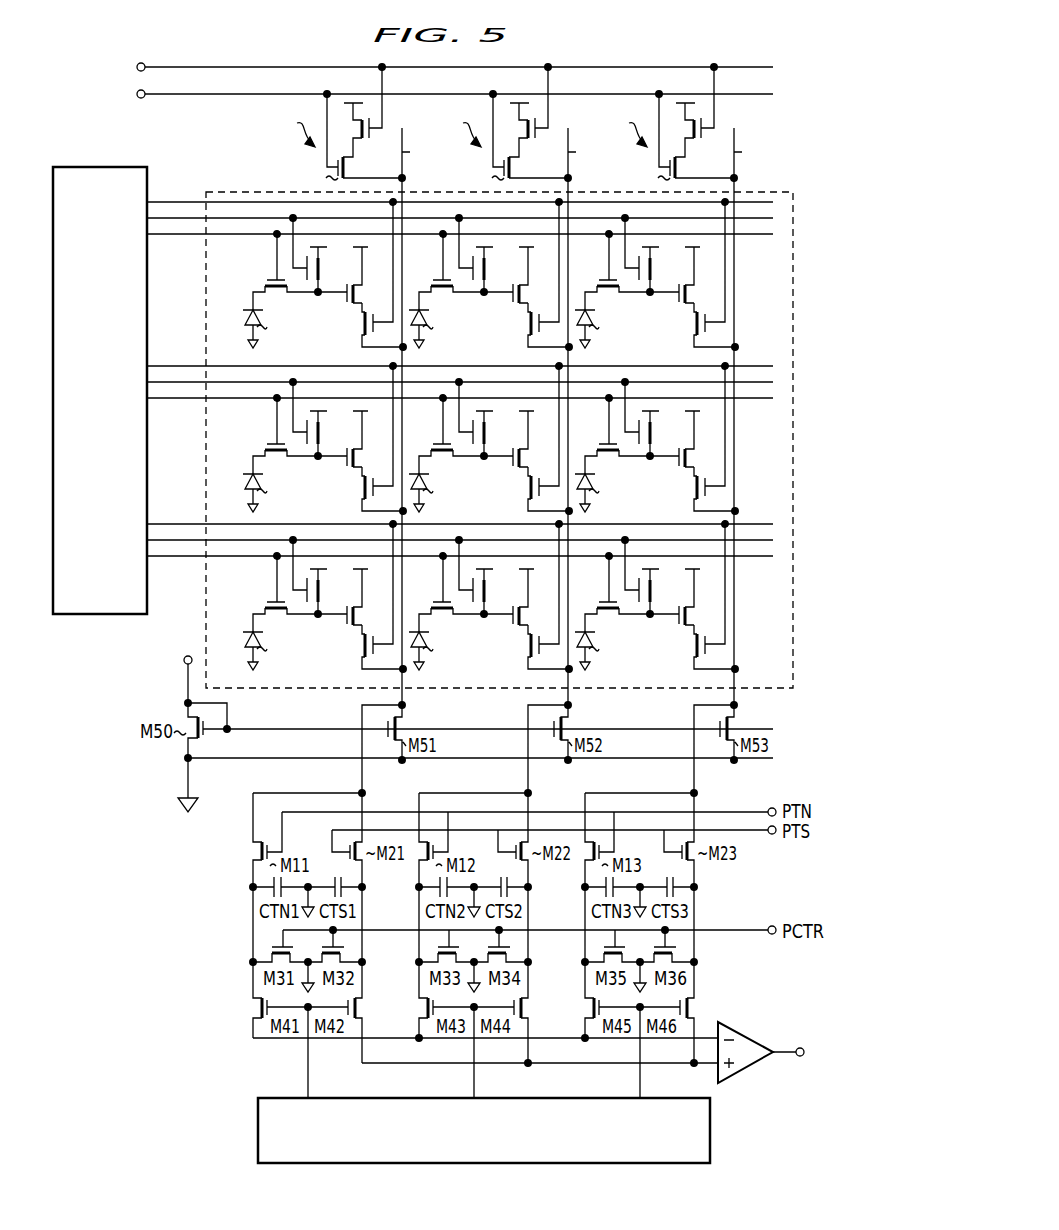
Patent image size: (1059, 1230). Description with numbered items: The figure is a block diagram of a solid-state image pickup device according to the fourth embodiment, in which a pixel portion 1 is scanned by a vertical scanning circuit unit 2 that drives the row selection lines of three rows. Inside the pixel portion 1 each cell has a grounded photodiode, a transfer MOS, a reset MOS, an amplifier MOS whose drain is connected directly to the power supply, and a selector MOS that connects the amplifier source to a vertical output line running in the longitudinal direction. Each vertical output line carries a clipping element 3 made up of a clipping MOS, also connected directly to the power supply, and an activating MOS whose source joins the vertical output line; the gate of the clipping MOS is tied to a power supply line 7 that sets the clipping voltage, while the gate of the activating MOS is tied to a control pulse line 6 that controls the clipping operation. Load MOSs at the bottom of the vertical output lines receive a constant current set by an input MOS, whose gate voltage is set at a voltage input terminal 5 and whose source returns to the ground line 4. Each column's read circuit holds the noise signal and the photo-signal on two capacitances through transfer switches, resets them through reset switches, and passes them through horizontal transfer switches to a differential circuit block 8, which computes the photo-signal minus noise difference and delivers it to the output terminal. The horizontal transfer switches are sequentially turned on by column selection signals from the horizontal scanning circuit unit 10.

The pixel portion 1 is at (237, 191).
The vertical scanning circuit unit 2 is at (75, 167).
The clipping element 3 is at (523, 125).
The GND line 4 is at (182, 777).
The voltage input terminal 5 is at (188, 656).
The control pulse line 6 is at (137, 94).
The power supply line 7 is at (137, 67).
The differential circuit block 8 is at (741, 1032).
The horizontal scanning circuit unit 10 is at (712, 1150).